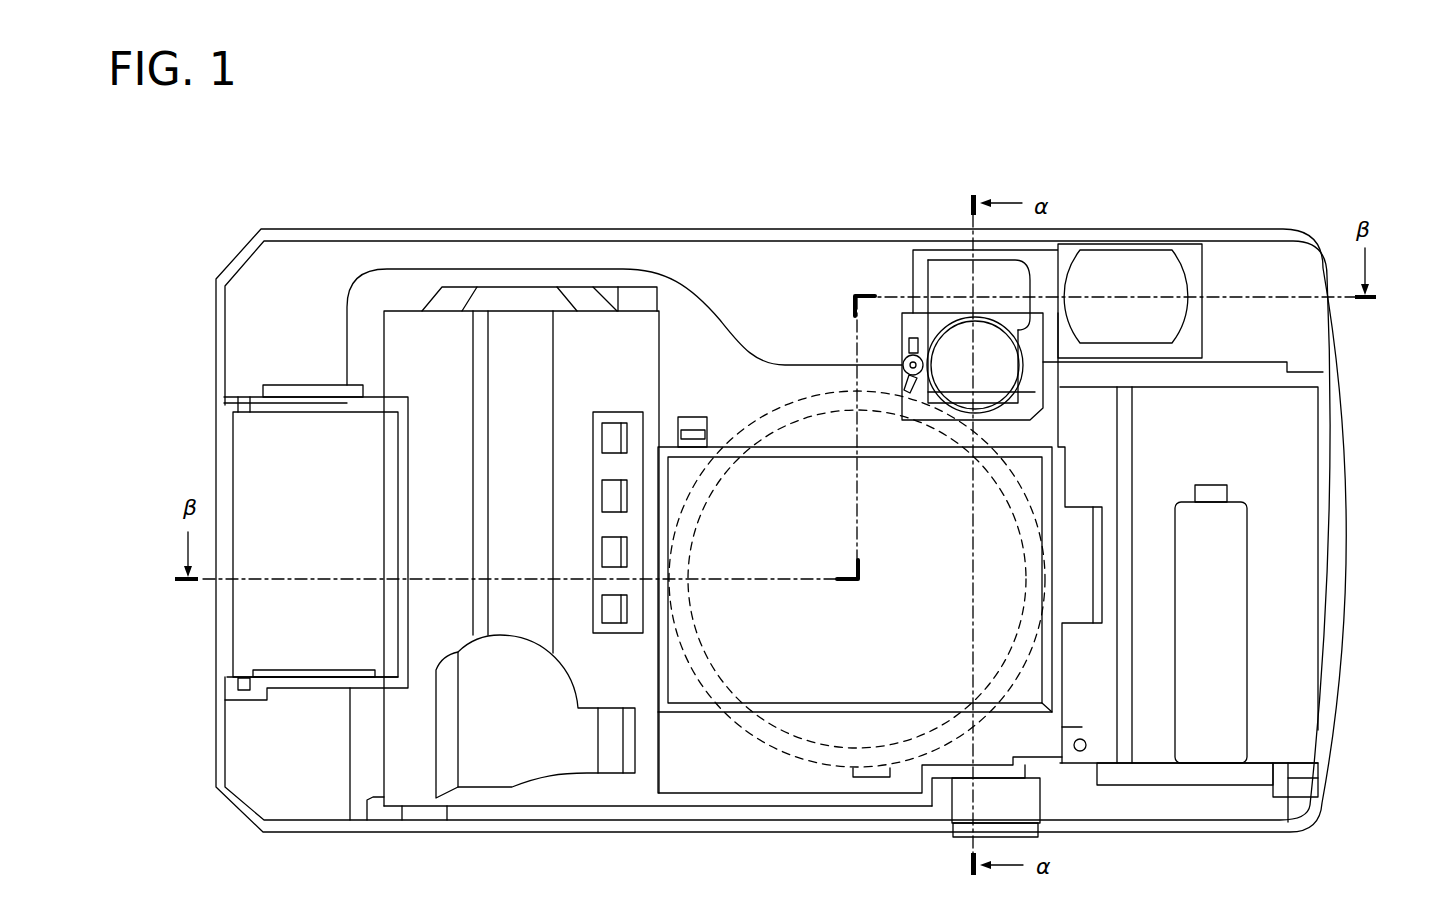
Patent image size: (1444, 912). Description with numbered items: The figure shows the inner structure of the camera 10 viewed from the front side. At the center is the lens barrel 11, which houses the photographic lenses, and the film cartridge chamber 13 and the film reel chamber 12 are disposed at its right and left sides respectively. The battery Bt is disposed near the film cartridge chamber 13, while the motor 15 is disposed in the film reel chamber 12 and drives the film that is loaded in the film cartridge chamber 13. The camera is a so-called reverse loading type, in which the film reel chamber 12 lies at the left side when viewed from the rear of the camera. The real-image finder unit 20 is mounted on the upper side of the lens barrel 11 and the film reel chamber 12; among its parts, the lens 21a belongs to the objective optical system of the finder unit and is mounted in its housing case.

The camera 10 is at (845, 221).
The lens barrel 11 is at (692, 618).
The film reel chamber 12 is at (1295, 563).
The film cartridge chamber 13 is at (445, 342).
The motor 15 is at (1233, 693).
The real-image finder unit 20 is at (1207, 258).
The lens 21a is at (997, 375).
The battery Bt is at (247, 448).